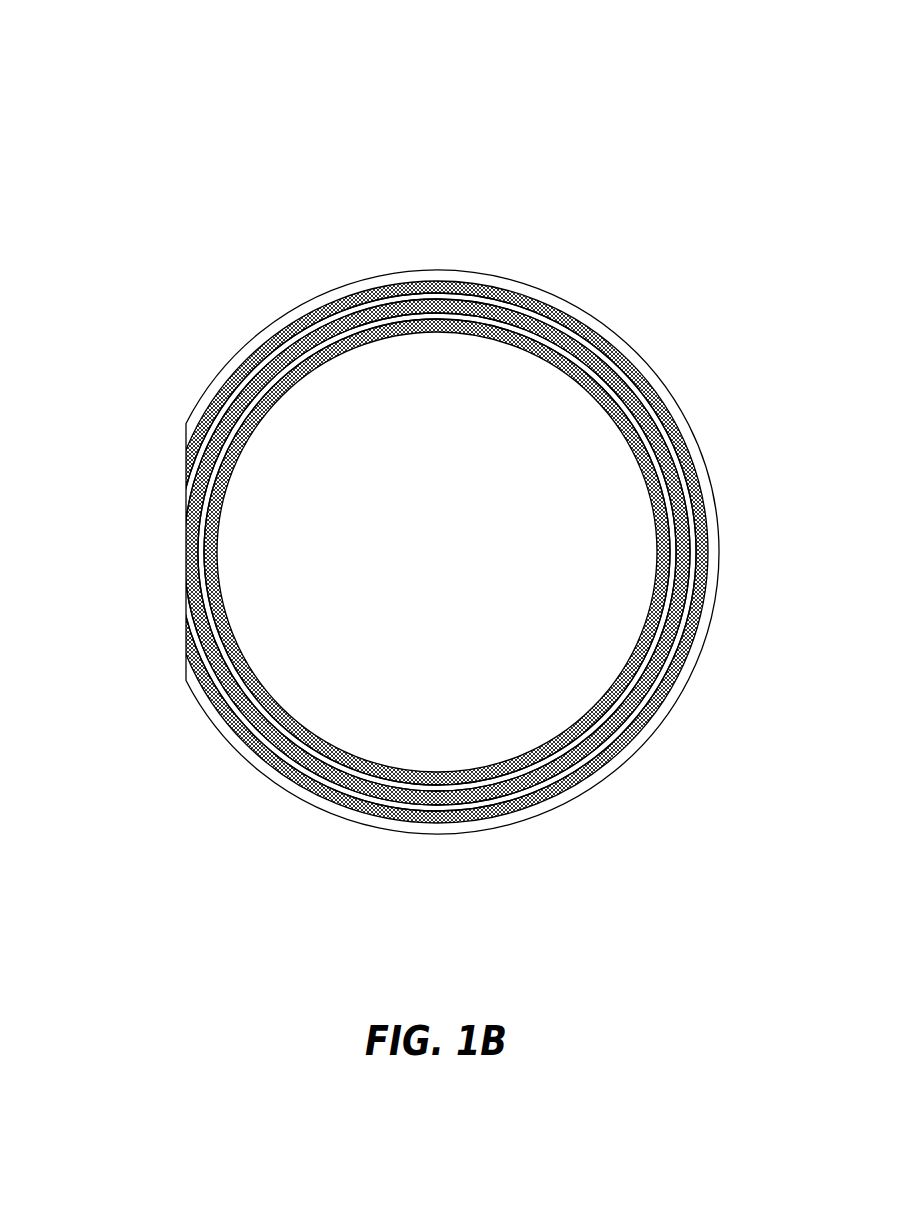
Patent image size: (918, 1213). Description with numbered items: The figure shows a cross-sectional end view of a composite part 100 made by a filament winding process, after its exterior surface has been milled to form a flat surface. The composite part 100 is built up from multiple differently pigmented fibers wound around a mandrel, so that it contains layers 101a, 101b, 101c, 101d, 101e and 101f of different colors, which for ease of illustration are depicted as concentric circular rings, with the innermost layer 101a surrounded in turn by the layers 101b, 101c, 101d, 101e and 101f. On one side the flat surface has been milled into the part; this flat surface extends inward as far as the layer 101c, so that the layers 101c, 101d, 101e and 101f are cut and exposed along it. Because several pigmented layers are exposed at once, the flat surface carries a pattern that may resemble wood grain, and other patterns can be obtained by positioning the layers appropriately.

The composite part 100 is at (453, 19).
The layer 101a is at (307, 798).
The layer 101b is at (238, 743).
The layer 101c is at (185, 567).
The layer 101d is at (185, 481).
The layer 101e is at (185, 448).
The layer 101f is at (185, 423).